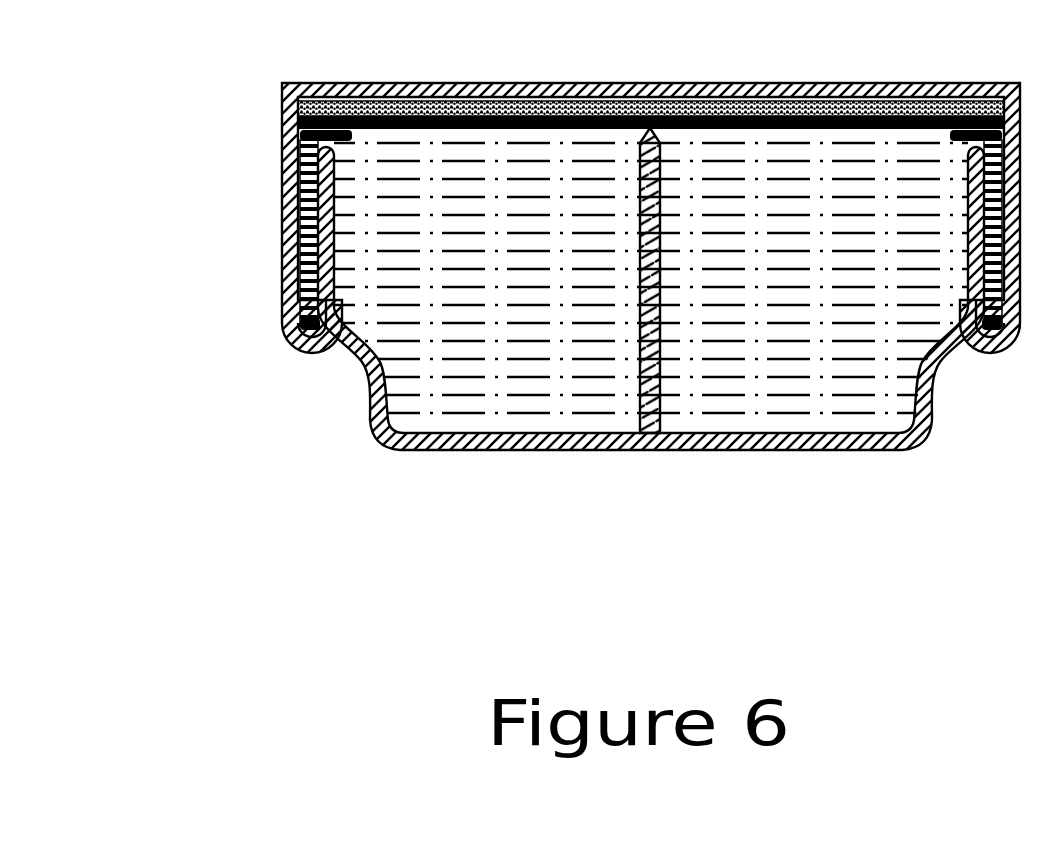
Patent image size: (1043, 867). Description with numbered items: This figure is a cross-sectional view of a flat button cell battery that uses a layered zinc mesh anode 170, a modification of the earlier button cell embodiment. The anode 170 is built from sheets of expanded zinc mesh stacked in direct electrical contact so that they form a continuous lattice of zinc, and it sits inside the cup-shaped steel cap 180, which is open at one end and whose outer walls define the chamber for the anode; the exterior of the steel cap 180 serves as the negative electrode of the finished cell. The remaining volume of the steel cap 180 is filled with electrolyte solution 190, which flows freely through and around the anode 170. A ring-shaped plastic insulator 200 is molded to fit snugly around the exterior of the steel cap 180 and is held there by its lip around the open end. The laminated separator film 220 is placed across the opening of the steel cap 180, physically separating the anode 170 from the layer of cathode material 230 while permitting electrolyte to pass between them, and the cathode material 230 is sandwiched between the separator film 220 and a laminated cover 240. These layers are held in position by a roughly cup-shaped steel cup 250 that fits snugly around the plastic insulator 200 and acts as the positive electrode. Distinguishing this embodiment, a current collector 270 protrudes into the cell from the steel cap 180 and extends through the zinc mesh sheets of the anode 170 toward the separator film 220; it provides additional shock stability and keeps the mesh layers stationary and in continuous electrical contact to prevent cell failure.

The layered zinc mesh anode 170 is at (580, 232).
The steel cap 180 is at (760, 450).
The electrolyte solution 190 is at (560, 290).
The plastic insulator 200 is at (337, 350).
The separator film 220 is at (283, 143).
The cathode material 230 is at (283, 119).
The laminated cover 240 is at (282, 91).
The steel cup 250 is at (365, 82).
The current collector 270 is at (648, 355).